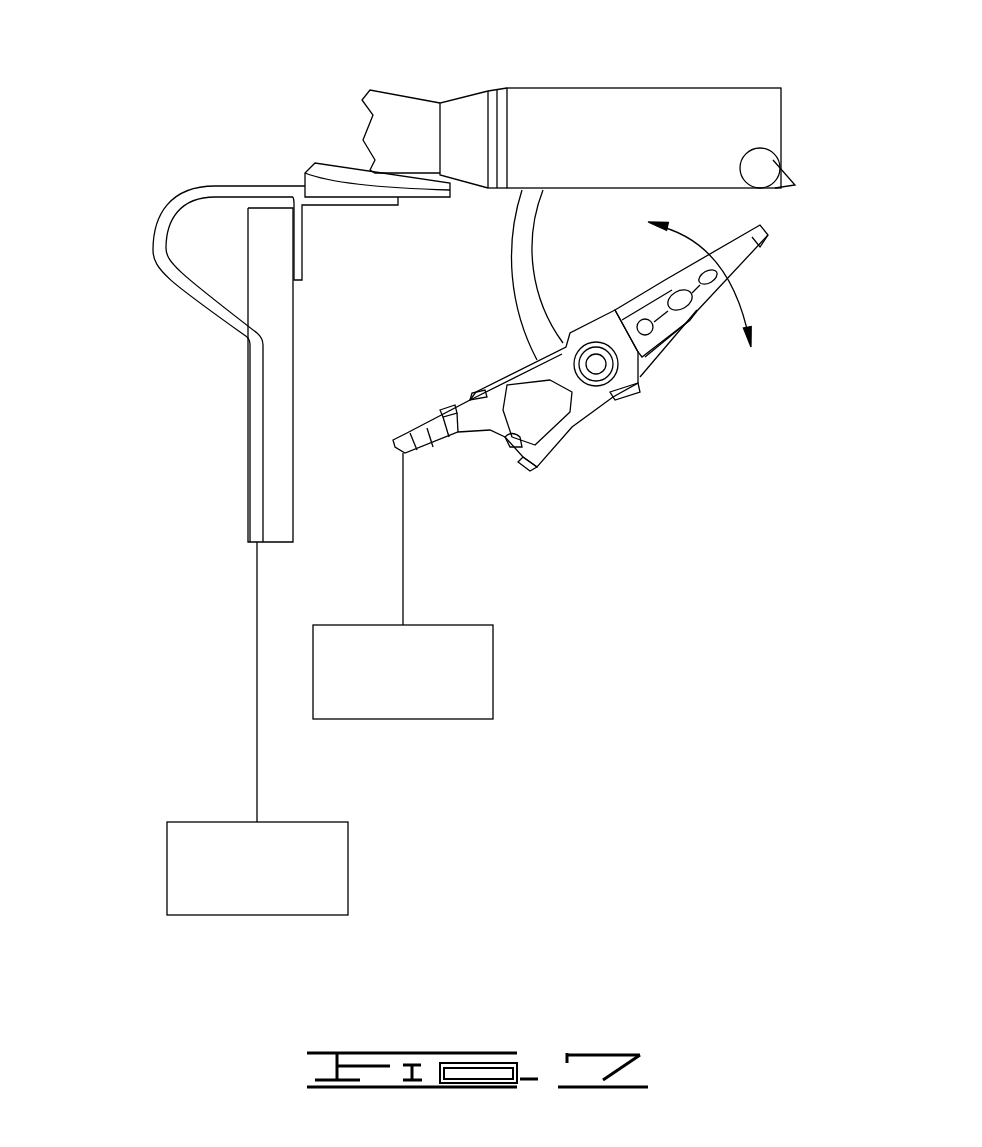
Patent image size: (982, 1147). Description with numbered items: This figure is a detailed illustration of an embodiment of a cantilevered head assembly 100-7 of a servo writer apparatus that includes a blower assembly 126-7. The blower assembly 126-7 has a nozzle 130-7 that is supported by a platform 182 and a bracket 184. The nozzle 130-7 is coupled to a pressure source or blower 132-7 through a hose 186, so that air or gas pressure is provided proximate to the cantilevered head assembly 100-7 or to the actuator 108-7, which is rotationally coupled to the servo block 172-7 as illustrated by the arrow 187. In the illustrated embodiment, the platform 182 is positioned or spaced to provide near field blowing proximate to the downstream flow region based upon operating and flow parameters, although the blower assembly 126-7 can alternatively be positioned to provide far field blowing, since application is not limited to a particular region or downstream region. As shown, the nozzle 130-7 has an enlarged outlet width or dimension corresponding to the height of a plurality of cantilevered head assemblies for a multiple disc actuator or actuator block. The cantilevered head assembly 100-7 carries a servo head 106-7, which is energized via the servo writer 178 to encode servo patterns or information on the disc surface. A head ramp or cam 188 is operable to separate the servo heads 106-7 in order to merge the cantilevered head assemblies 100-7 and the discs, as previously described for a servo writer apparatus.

The cantilevered head assembly 100-7 is at (647, 348).
The servo head 106-7 is at (767, 237).
The actuator 108-7 is at (570, 427).
The blower assembly 126-7 is at (230, 173).
The nozzle 130-7 is at (422, 197).
The pressure source or blower 132-7 is at (167, 867).
The servo block 172-7 is at (605, 87).
The servo writer 178 is at (493, 658).
The platform 182 is at (293, 367).
The bracket 184 is at (320, 208).
The hose 186 is at (163, 222).
The arrow 187 is at (748, 300).
The head ramp or cam 188 is at (770, 157).